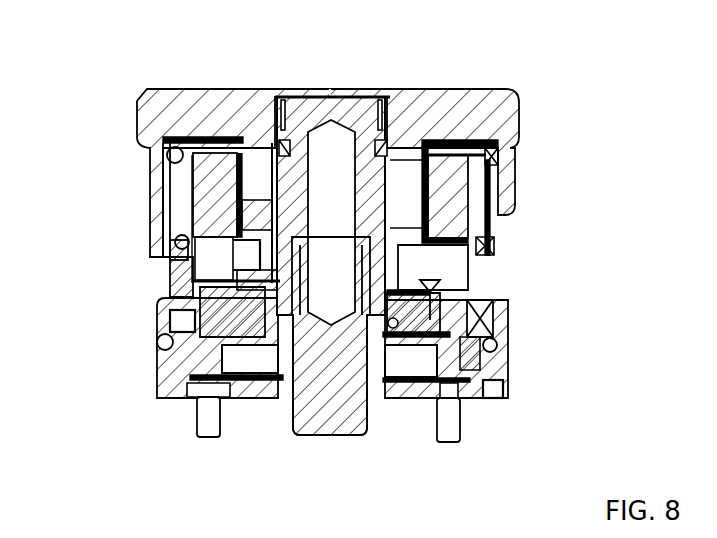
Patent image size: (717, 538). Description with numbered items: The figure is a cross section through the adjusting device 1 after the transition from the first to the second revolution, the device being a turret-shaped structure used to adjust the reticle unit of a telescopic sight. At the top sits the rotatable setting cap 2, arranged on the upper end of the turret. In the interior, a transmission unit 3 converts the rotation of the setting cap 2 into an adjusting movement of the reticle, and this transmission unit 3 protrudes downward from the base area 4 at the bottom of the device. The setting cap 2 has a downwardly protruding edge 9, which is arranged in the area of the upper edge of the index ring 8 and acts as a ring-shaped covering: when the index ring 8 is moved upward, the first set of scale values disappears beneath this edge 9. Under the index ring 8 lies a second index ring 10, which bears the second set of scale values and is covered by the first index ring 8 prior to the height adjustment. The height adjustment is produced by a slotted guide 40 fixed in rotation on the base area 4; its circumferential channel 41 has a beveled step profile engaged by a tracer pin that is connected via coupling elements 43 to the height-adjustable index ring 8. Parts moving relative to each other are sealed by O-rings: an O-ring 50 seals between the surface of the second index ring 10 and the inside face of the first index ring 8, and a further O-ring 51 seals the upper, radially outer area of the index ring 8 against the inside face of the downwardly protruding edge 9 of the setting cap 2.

The adjusting device 1 is at (518, 48).
The setting cap 2 is at (437, 90).
The transmission unit 3 is at (316, 432).
The base area 4 is at (150, 365).
The index ring 8 is at (160, 230).
The downwardly protruding edge 9 is at (507, 222).
The second index ring 10 is at (167, 277).
The slotted guide 40 is at (253, 235).
The circumferential channel 41 is at (405, 260).
The coupling elements 43 is at (160, 198).
The O-ring 50 is at (160, 250).
The O-ring 51 is at (165, 165).